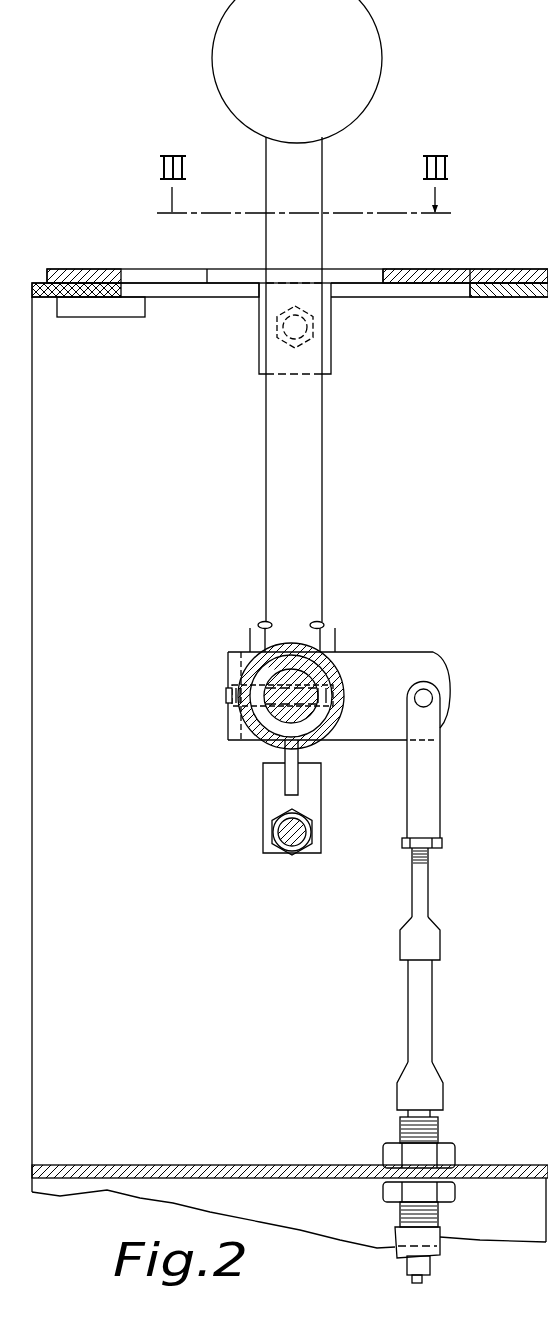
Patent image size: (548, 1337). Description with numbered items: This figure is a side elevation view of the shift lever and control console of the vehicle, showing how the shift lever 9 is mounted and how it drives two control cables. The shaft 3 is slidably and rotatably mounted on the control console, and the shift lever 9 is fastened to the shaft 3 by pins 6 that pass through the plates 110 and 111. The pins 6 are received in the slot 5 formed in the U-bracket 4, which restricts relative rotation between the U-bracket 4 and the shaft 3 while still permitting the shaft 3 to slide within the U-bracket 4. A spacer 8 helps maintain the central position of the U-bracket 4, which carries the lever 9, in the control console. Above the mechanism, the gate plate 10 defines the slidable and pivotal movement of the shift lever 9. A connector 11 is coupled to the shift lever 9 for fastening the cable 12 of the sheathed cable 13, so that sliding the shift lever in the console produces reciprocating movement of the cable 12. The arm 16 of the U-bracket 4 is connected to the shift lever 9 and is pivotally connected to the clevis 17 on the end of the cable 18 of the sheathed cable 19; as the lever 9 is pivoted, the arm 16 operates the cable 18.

The shaft 3 is at (307, 723).
The U-bracket 4 is at (228, 724).
The slot 5 is at (238, 691).
The pins 6 is at (224, 696).
The spacer 8 is at (342, 711).
The shift lever 9 is at (318, 463).
The gate plate 10 is at (83, 268).
The connector 11 is at (270, 790).
The cable 12 is at (276, 833).
The sheathed cable 13 is at (314, 823).
The arm 16 is at (397, 656).
The clevis 17 is at (439, 731).
The cable 18 is at (422, 886).
The sheathed cable 19 is at (399, 1076).
The plate 110 is at (262, 622).
The plate 111 is at (323, 622).